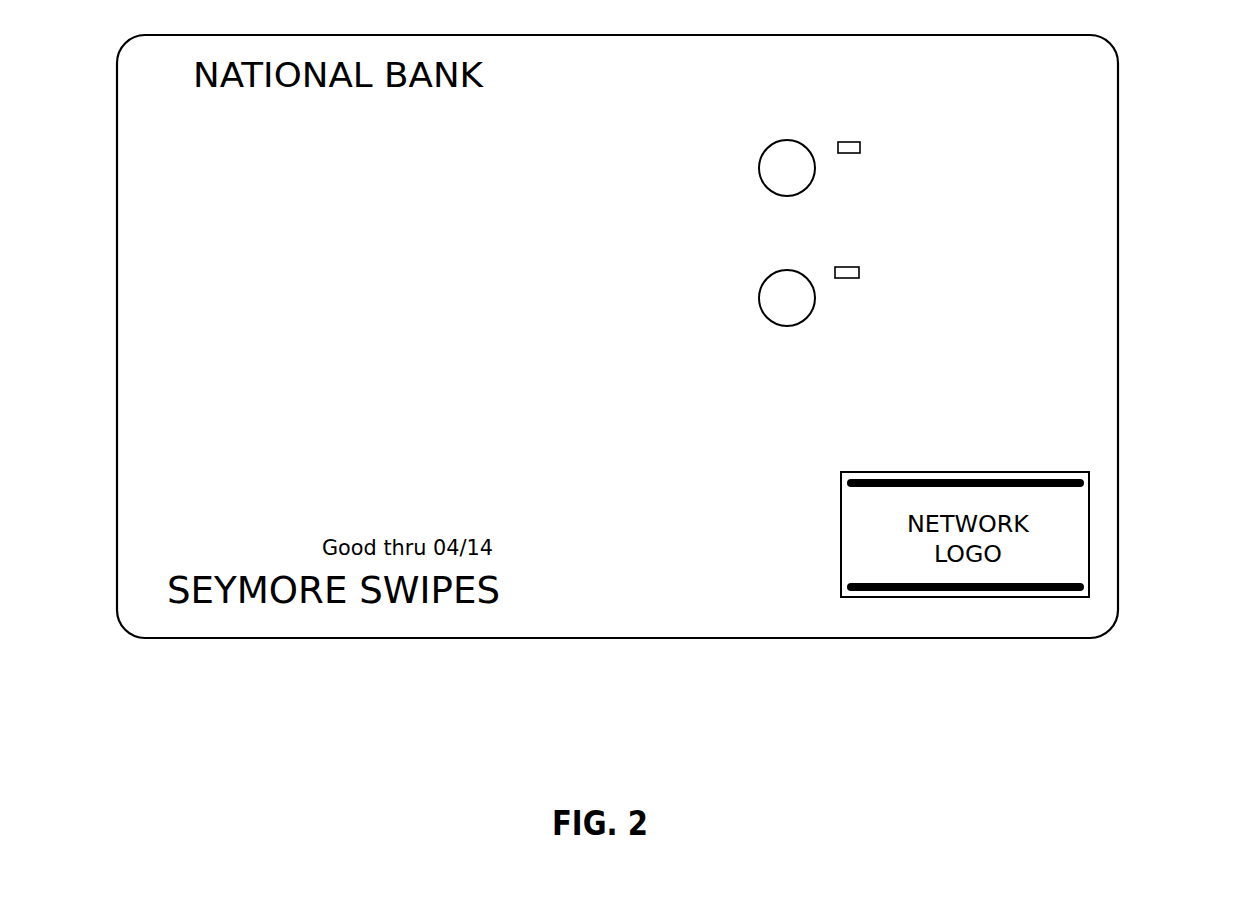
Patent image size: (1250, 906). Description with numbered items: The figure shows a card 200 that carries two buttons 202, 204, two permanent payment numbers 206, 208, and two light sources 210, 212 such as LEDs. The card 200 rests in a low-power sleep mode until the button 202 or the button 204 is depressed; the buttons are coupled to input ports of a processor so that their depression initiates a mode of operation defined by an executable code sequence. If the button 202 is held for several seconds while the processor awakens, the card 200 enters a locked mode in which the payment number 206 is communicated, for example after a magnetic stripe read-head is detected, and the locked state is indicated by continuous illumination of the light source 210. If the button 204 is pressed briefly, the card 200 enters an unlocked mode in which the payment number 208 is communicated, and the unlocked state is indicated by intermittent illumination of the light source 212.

The card 200 is at (1223, 359).
The button 202 is at (769, 146).
The button 204 is at (768, 277).
The permanent payment number 206 is at (423, 160).
The permanent payment number 208 is at (422, 287).
The light source 210 is at (855, 142).
The light source 212 is at (852, 267).